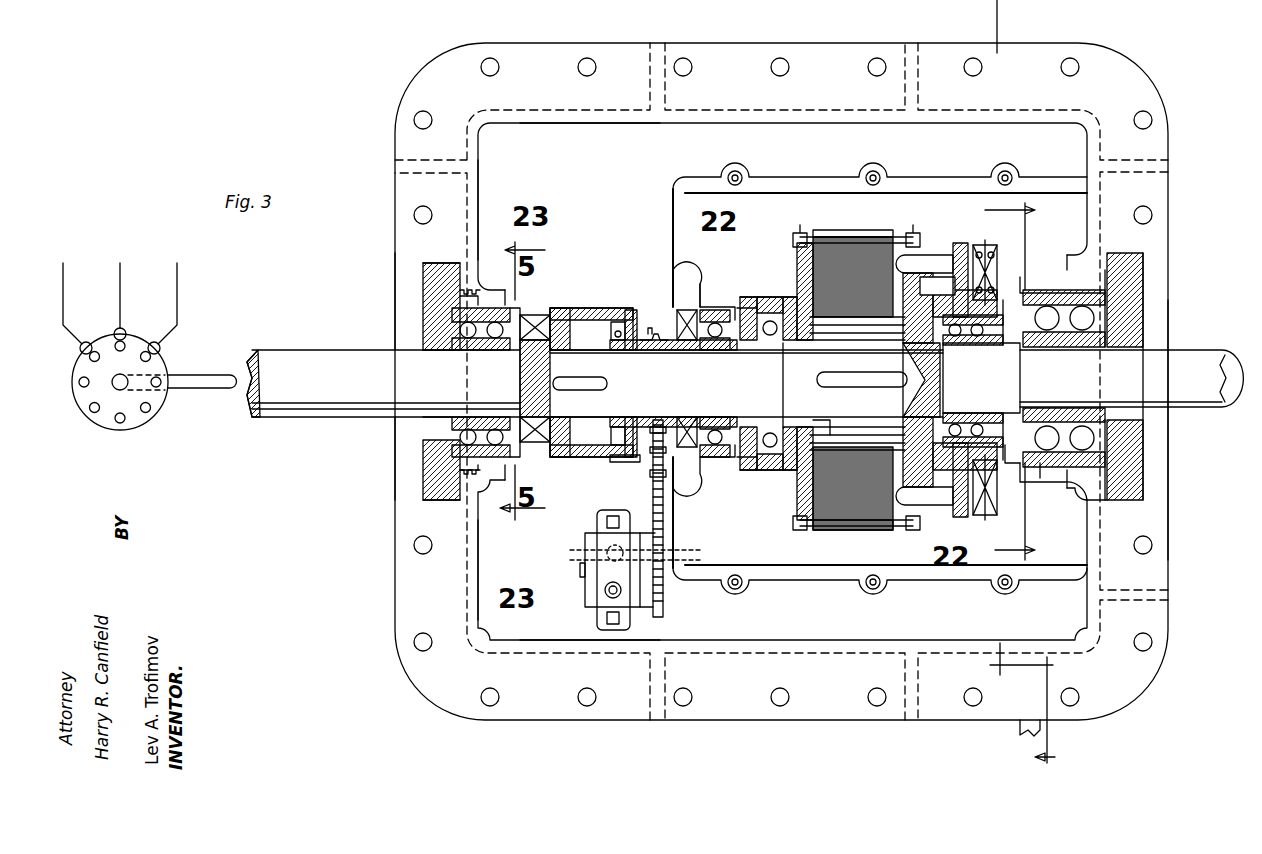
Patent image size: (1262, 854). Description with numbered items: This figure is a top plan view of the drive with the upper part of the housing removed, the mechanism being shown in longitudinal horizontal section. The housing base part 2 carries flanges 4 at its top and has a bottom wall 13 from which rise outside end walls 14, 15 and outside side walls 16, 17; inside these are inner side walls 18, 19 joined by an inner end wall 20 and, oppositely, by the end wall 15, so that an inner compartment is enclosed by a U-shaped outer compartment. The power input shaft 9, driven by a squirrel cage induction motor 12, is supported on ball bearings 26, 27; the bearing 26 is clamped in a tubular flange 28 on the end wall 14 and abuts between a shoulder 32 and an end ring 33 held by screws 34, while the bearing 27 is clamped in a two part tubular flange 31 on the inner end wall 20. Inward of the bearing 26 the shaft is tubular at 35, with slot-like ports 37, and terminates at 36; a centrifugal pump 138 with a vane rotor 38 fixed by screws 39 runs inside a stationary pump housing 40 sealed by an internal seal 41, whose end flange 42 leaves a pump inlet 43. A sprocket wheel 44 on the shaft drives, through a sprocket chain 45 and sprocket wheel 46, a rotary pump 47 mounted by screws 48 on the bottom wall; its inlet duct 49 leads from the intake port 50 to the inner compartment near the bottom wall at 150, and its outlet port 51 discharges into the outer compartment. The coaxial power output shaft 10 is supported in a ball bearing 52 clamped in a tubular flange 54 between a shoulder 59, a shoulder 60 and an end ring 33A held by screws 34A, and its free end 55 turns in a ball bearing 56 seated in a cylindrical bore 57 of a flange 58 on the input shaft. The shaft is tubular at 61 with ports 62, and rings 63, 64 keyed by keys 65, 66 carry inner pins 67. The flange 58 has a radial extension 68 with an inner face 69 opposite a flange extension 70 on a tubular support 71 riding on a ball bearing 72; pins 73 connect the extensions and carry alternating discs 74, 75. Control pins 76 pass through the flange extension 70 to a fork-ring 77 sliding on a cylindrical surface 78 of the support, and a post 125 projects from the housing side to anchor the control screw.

The base part 2 is at (1168, 588).
The flanges 4 is at (1160, 185).
The power input shaft 9 is at (325, 350).
The power output shaft 10 is at (1185, 350).
The squirrel cage induction motor 12 is at (155, 418).
The bottom wall 13 is at (781, 381).
The outside end wall 14 is at (478, 184).
The outside end wall 15 is at (1085, 140).
The outside side wall 16 is at (514, 641).
The outside side wall 17 is at (606, 121).
The inner side wall 18 is at (785, 586).
The inner side wall 19 is at (780, 178).
The inner end wall 20 is at (673, 229).
The ball bearing 26 is at (480, 351).
The ball bearing 27 is at (720, 351).
The tubular flange 28 is at (504, 290).
The two part tubular flange 31 is at (716, 293).
The shoulder 32 is at (518, 386).
The end ring 33 is at (423, 442).
The end ring 33A is at (1145, 290).
The screws 34 is at (423, 272).
The screws 34A is at (1125, 301).
The tubular shaft part 35 is at (655, 351).
The shaft end 36 is at (740, 391).
The slot-like ports 37 is at (608, 384).
The pump rotor 38 is at (618, 322).
The screws 39 is at (615, 456).
The stationary pump housing 40 is at (568, 309).
The internal seal 41 is at (538, 316).
The end flange 42 is at (637, 316).
The pump inlet 43 is at (647, 338).
The sprocket wheel 44 is at (655, 441).
The sprocket chain 45 is at (655, 481).
The sprocket wheel 46 is at (665, 606).
The rotary pump 47 is at (585, 600).
The screws 48 is at (607, 521).
The inlet duct 49 is at (672, 560).
The intake port 50 is at (623, 549).
The outlet port 51 is at (605, 588).
The ball bearing 52 is at (1047, 348).
The tubular flange 54 is at (1040, 478).
The free end 55 is at (745, 401).
The ball bearing 56 is at (770, 341).
The cylindrical bore 57 is at (800, 298).
The flange 58 is at (757, 300).
The shoulder 59 is at (1020, 386).
The shoulder 60 is at (1020, 286).
The tubular portion 61 is at (790, 355).
The slot-like ports 62 is at (818, 380).
The ring 63 is at (805, 344).
The ring 64 is at (905, 344).
The key 65 is at (810, 426).
The key 66 is at (908, 419).
The inner pins 67 is at (850, 341).
The radial extension 68 is at (797, 240).
The inner face 69 is at (800, 258).
The flange extension 70 is at (900, 256).
The tubular support 71 is at (983, 346).
The ball bearing 72 is at (955, 346).
The pins 73 is at (862, 237).
The discs 74 is at (810, 527).
The discs 75 is at (840, 530).
The control pins 76 is at (921, 262).
The fork-ring 77 is at (958, 250).
The cylindrical surface 78 is at (958, 373).
The post 125 is at (1020, 723).
The centrifugal pump 138 is at (583, 328).
The duct inlet location 150 is at (690, 558).